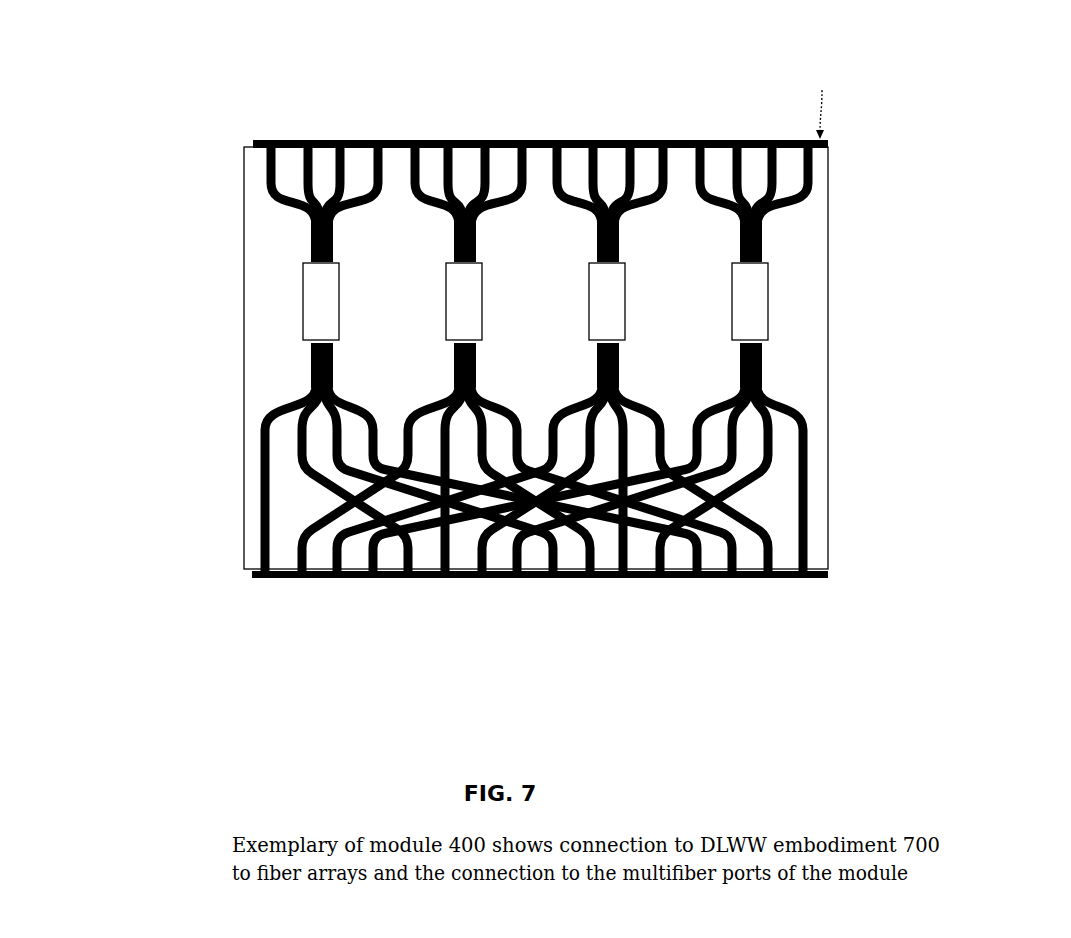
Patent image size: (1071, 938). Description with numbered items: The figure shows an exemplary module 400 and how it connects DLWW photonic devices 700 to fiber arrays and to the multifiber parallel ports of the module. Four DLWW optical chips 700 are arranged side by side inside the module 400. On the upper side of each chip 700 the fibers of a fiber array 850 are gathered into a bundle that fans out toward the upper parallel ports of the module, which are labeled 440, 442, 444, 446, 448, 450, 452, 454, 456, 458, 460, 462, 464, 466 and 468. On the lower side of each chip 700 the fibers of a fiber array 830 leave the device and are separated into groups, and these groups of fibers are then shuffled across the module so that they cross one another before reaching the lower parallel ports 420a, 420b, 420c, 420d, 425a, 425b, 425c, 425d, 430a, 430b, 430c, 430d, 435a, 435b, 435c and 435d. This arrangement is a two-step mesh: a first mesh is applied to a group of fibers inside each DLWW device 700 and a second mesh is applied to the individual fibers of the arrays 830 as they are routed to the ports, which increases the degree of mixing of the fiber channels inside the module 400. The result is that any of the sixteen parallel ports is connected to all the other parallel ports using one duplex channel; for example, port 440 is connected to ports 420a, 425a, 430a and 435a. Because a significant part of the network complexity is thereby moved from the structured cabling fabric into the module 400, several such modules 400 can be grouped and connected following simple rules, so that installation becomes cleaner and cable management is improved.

The module 400 is at (228, 185).
The fiber array 850 is at (300, 240).
The fiber array 830 is at (297, 363).
The DLWW optical chip 700 is at (535, 301).
The parallel port 440 is at (268, 131).
The parallel port 442 is at (298, 131).
The parallel port 444 is at (338, 131).
The parallel port 446 is at (367, 131).
The parallel port 448 is at (417, 131).
The parallel port 450 is at (447, 131).
The parallel port 452 is at (485, 131).
The parallel port 454 is at (522, 131).
The parallel port 456 is at (560, 131).
The parallel port 458 is at (595, 131).
The parallel port 460 is at (632, 131).
The parallel port 462 is at (662, 131).
The parallel port 464 is at (700, 131).
The parallel port 466 is at (737, 131).
The parallel port 468 is at (775, 131).
The parallel port 420a is at (263, 590).
The parallel port 420b is at (295, 590).
The parallel port 420c is at (328, 590).
The parallel port 420d is at (367, 590).
The parallel port 425a is at (408, 590).
The parallel port 425b is at (440, 590).
The parallel port 425c is at (473, 590).
The parallel port 425d is at (510, 590).
The parallel port 430a is at (548, 590).
The parallel port 430b is at (583, 590).
The parallel port 430c is at (623, 590).
The parallel port 430d is at (660, 590).
The parallel port 435a is at (705, 590).
The parallel port 435b is at (740, 590).
The parallel port 435c is at (789, 588).
The parallel port 435d is at (820, 588).